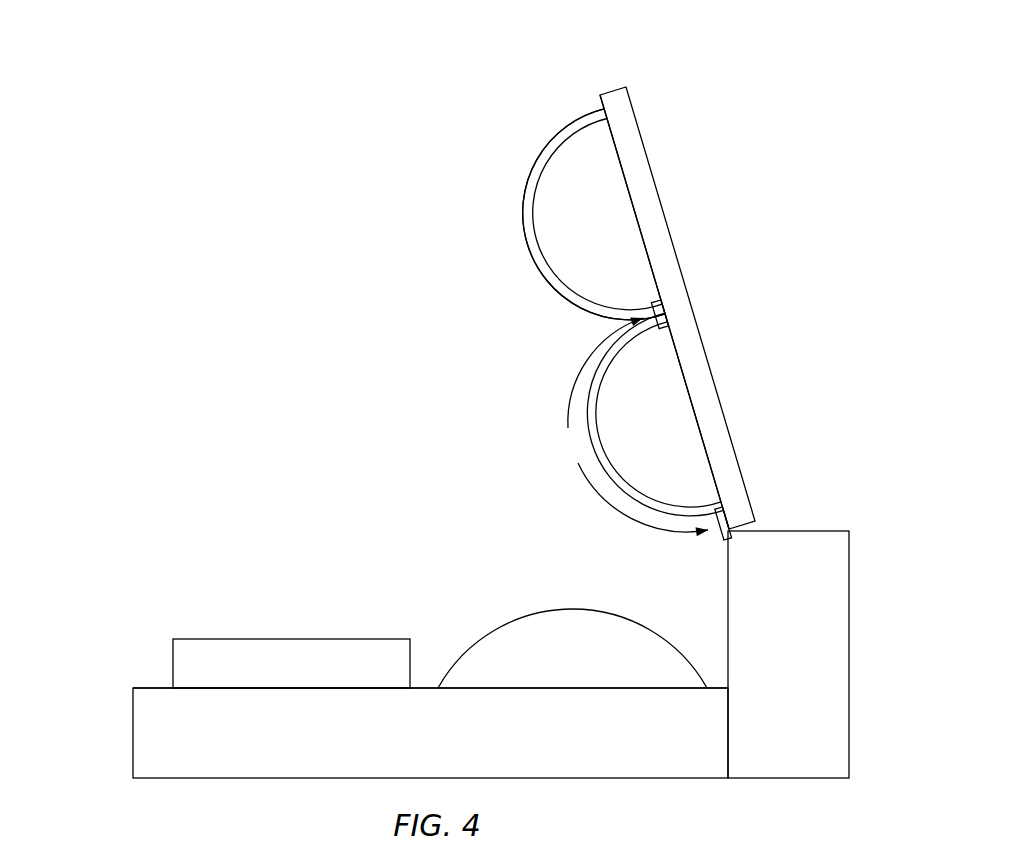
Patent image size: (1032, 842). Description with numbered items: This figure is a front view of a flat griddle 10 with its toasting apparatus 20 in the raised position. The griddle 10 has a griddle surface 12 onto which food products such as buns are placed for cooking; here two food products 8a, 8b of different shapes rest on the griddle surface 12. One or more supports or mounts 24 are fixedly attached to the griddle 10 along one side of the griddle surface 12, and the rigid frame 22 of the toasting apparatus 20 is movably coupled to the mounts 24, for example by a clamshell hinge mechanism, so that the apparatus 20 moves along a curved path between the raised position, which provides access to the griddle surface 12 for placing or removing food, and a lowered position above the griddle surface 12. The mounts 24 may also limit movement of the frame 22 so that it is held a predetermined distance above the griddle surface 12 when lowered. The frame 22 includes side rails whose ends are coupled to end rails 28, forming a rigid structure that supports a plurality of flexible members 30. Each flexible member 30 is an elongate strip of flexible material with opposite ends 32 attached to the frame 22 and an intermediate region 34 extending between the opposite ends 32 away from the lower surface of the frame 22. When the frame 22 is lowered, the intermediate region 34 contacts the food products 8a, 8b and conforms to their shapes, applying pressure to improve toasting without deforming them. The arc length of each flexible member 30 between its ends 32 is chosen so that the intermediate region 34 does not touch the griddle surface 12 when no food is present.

The food product 8a is at (538, 609).
The food product 8b is at (357, 638).
The flat griddle 10 is at (127, 741).
The griddle surface 12 is at (150, 688).
The toasting apparatus 20 is at (645, 275).
The rigid frame 22 is at (707, 350).
The support or mount 24 is at (850, 586).
The end rail 28 is at (723, 454).
The flexible member 30 is at (512, 151).
The opposite ends 32 is at (598, 111).
The intermediate region 34 is at (523, 227).